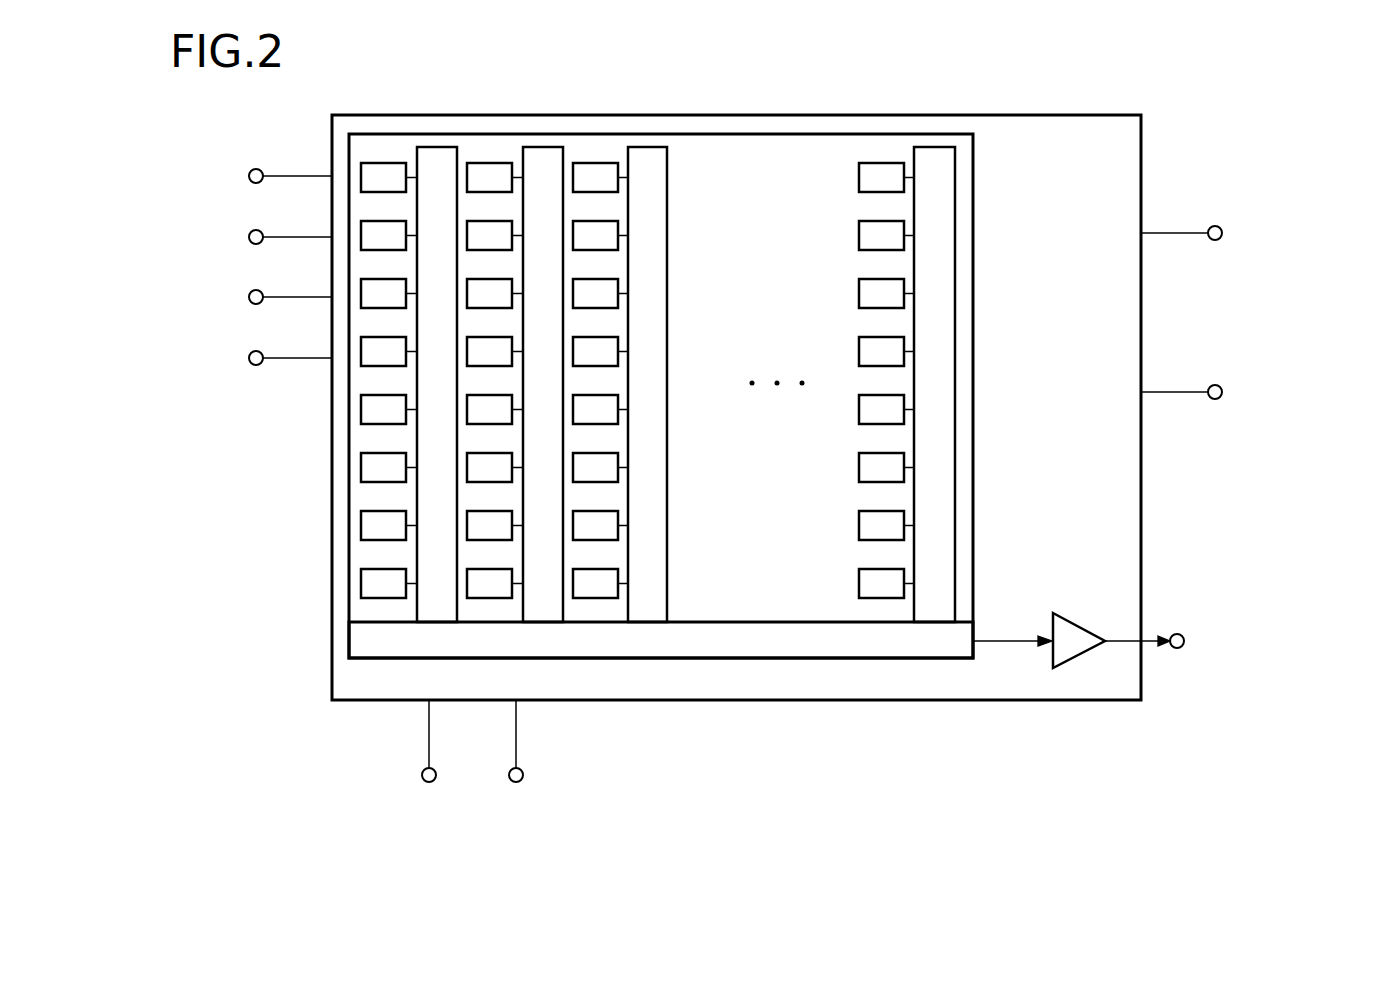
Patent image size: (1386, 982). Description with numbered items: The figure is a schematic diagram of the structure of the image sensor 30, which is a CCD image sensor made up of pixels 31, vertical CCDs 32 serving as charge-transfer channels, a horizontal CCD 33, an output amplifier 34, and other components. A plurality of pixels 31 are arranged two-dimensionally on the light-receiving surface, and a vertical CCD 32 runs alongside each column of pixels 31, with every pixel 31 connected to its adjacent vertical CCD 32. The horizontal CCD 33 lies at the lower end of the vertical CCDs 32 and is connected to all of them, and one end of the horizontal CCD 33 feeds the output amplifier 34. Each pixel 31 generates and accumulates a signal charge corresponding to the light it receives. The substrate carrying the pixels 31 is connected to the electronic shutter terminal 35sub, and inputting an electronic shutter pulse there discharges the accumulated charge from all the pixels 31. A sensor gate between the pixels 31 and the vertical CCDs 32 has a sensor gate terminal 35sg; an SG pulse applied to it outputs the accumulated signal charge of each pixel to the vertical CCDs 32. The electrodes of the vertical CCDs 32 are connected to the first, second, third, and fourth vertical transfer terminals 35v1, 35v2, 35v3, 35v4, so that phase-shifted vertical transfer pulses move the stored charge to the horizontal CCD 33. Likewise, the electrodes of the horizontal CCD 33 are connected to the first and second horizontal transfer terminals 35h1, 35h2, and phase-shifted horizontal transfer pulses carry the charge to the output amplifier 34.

The image sensor 30 is at (713, 110).
The pixels 31 is at (487, 163).
The vertical CCDs 32 is at (643, 147).
The horizontal CCD 33 is at (733, 660).
The output amplifier 34 is at (1080, 656).
The first vertical transfer terminal 35v1 is at (249, 174).
The second vertical transfer terminal 35v2 is at (249, 235).
The third vertical transfer terminal 35v3 is at (249, 295).
The fourth vertical transfer terminal 35v4 is at (249, 356).
The sensor gate terminal 35sg is at (1222, 231).
The electronic shutter terminal 35sub is at (1222, 390).
The first horizontal transfer terminal 35h1 is at (429, 782).
The second horizontal transfer terminal 35h2 is at (516, 782).